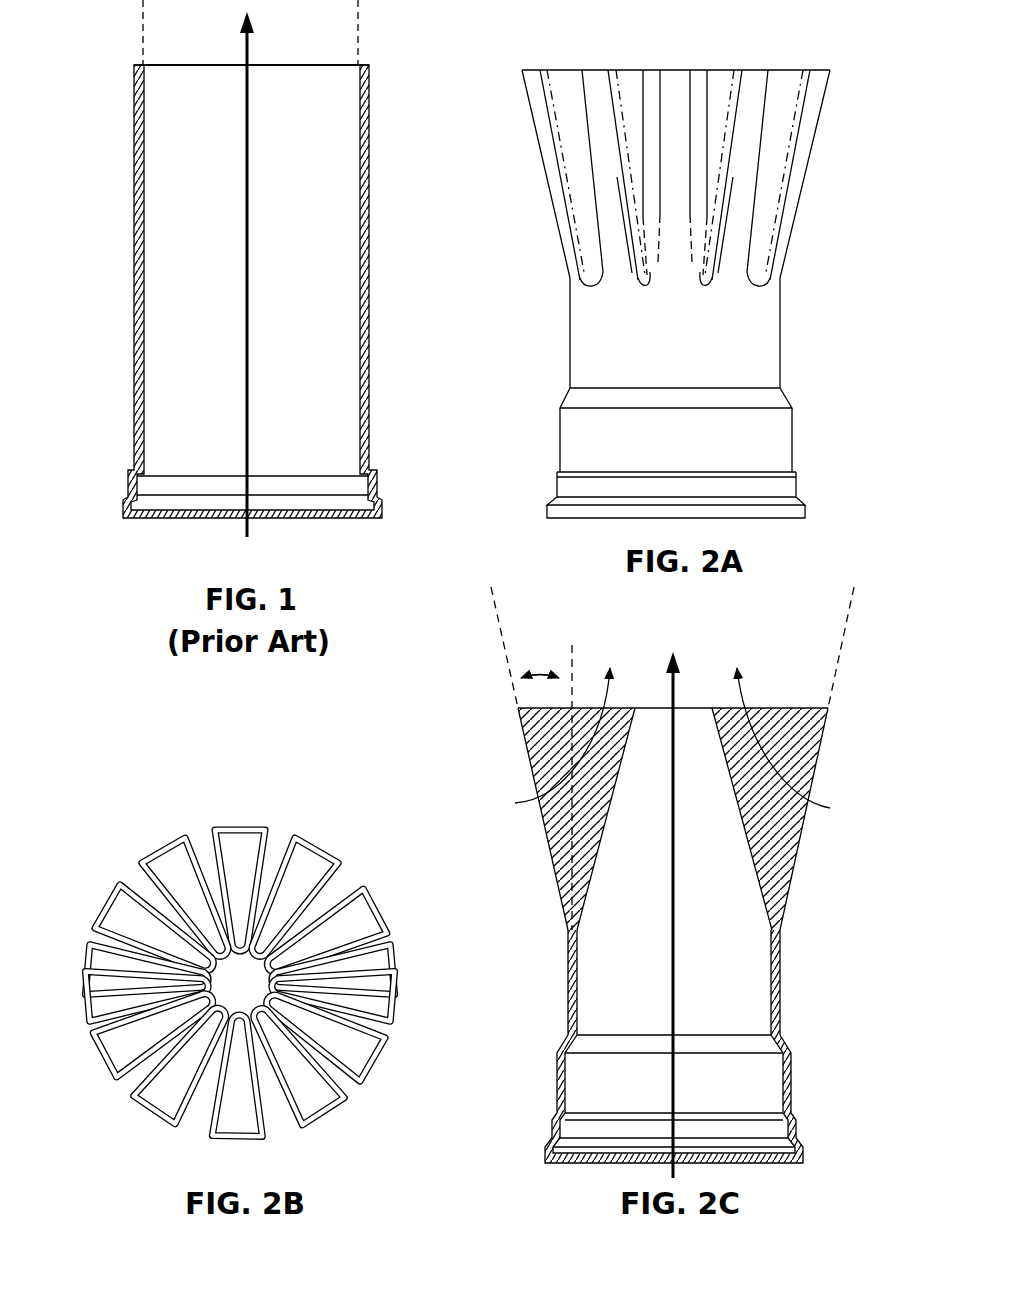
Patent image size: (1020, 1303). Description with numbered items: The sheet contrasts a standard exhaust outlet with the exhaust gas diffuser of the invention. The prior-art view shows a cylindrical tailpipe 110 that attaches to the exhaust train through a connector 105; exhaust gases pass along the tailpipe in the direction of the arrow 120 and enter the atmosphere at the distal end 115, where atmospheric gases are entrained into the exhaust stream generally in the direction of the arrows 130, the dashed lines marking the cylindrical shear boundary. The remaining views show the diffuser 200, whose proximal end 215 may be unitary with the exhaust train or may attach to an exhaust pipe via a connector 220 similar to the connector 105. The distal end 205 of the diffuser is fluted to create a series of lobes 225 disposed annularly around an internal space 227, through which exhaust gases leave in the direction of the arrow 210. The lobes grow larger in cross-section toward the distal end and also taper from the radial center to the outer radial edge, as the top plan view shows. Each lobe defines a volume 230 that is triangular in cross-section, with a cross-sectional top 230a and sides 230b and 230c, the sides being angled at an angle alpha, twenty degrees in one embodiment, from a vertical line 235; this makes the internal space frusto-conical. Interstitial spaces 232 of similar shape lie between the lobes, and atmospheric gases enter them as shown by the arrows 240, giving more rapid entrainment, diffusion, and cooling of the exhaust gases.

In FIG. 1, the connector 105 is at (388, 470).
In FIG. 1, the tailpipe 110 is at (112, 179).
In FIG. 1, the distal end 115 is at (386, 65).
In FIG. 1, the arrow 120 is at (250, 248).
In FIG. 1, the arrows 130 is at (130, 0).
In FIG. 2A, the exhaust gas diffuser 200 is at (514, 285).
In FIG. 2B, the exhaust gas diffuser 200 is at (86, 867).
In FIG. 2C, the exhaust gas diffuser 200 is at (477, 872).
In FIG. 2A, the distal end 205 is at (838, 70).
In FIG. 2B, the distal end 205 is at (161, 838).
In FIG. 2C, the distal end 205 is at (842, 708).
In FIG. 2C, the arrow 210 is at (676, 953).
In FIG. 2A, the proximal end 215 is at (801, 285).
In FIG. 2C, the proximal end 215 is at (797, 928).
In FIG. 2A, the connector 220 is at (813, 390).
In FIG. 2C, the connector 220 is at (813, 1035).
In FIG. 2A, the lobes 225 is at (670, 98).
In FIG. 2B, the lobes 225 is at (367, 893).
In FIG. 2C, the internal space 227 is at (660, 859).
In FIG. 2B, the lobe volume 230 is at (367, 1047).
In FIG. 2C, the cross-sectional top 230a is at (782, 707).
In FIG. 2C, the cross-sectional side 230b is at (822, 742).
In FIG. 2C, the cross-sectional side 230c is at (745, 827).
In FIG. 2A, the interstitial spaces 232 is at (718, 105).
In FIG. 2B, the interstitial spaces 232 is at (277, 1123).
In FIG. 2C, the vertical line 235 is at (572, 880).
In FIG. 2C, the arrows 240 is at (673, 745).